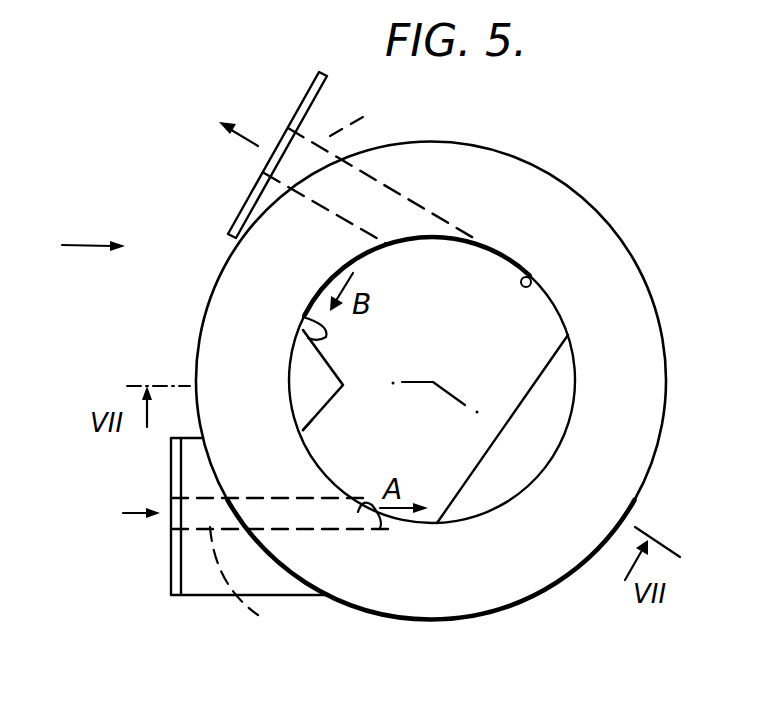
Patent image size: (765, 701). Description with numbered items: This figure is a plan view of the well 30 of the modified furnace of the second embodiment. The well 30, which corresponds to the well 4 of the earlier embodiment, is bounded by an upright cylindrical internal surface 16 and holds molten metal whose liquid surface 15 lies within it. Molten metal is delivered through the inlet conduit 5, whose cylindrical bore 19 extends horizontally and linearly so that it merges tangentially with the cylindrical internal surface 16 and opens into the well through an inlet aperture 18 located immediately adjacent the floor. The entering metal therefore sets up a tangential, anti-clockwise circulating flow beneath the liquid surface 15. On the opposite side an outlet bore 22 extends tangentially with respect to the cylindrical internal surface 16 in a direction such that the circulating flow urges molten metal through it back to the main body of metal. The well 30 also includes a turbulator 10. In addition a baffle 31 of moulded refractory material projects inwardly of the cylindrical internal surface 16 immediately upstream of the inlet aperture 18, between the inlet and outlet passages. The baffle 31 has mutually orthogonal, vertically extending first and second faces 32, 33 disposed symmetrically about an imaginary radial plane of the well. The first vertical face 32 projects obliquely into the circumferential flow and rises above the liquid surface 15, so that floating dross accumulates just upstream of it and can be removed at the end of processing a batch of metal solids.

The well 4 is at (667, 342).
The inlet conduit 5 is at (193, 602).
The turbulator 10 is at (550, 435).
The liquid surface 15 is at (477, 267).
The cylindrical internal surface 16 is at (531, 283).
The inlet aperture 18 is at (380, 528).
The cylindrical bore 19 is at (249, 585).
The outlet bore 22 is at (322, 95).
The well 30 is at (69, 246).
The baffle 31 is at (297, 375).
The first vertical face 32 is at (303, 317).
The second vertical face 33 is at (313, 423).